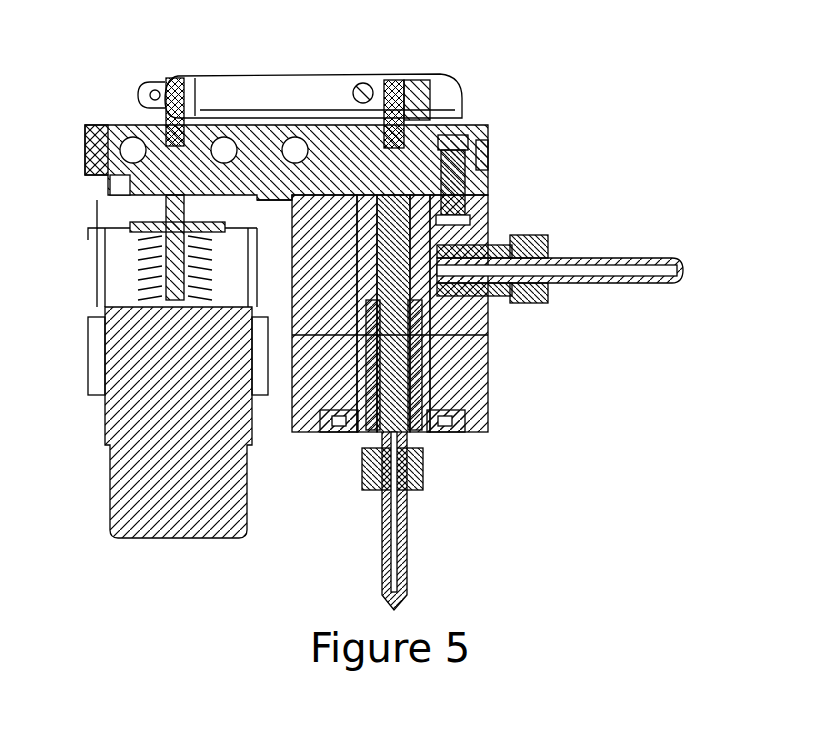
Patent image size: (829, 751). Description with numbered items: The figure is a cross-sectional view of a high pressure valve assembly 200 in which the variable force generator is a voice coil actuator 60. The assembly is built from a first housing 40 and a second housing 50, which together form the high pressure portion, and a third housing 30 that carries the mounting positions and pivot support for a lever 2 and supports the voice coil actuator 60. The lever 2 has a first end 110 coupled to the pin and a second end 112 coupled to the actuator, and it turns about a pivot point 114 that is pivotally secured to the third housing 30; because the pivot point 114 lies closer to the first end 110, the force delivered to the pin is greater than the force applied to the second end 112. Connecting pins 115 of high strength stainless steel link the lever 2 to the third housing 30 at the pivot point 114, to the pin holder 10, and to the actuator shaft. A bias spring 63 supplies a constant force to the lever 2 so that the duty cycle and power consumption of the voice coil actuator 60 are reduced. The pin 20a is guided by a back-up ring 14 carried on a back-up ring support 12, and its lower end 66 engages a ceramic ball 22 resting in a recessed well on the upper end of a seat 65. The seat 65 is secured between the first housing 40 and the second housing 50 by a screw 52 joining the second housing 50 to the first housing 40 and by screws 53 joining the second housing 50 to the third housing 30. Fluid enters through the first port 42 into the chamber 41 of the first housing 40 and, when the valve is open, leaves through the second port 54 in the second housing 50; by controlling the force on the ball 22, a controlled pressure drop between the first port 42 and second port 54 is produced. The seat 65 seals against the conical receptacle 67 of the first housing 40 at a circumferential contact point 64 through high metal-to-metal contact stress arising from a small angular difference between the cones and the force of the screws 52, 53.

The lever 2 is at (235, 85).
The pin holder 10 is at (430, 118).
The back-up ring support 12 is at (488, 182).
The back-up ring 14 is at (470, 206).
The pin 20a is at (462, 170).
The ceramic ball 22 is at (297, 380).
The third housing 30 is at (148, 125).
The first housing 40 is at (490, 216).
The chamber 41 is at (500, 243).
The first port 42 is at (548, 302).
The second housing 50 is at (480, 385).
The screw 52 is at (455, 434).
The screws 53 is at (325, 434).
The second port 54 is at (415, 492).
The voice coil actuator 60 is at (112, 482).
The bias spring 63 is at (148, 266).
The circumferential contact point 64 is at (490, 306).
The seat 65 is at (480, 350).
The end 66 is at (290, 330).
The conical receptacle 67 is at (490, 316).
The first end 110 is at (430, 96).
The second end 112 is at (158, 85).
The pivot point 114 is at (366, 84).
The connecting pins 115 is at (176, 80).
The valve assembly 200 is at (560, 128).